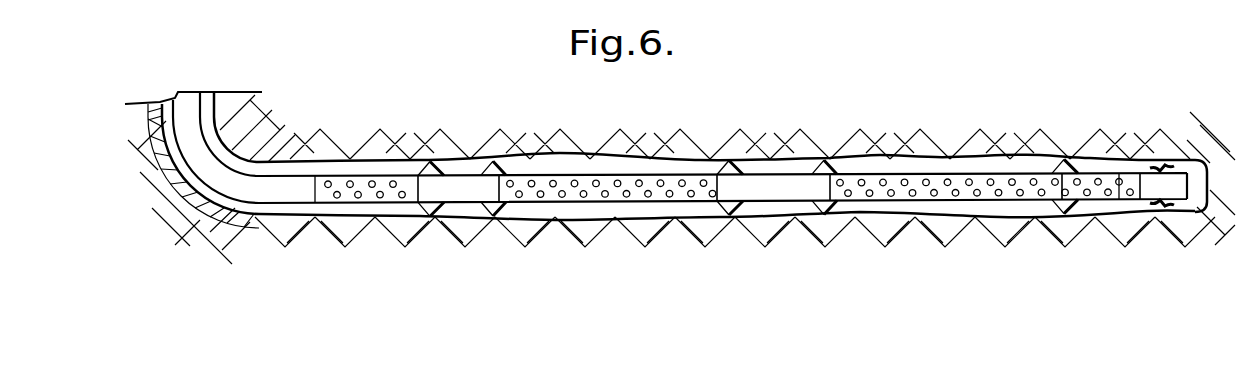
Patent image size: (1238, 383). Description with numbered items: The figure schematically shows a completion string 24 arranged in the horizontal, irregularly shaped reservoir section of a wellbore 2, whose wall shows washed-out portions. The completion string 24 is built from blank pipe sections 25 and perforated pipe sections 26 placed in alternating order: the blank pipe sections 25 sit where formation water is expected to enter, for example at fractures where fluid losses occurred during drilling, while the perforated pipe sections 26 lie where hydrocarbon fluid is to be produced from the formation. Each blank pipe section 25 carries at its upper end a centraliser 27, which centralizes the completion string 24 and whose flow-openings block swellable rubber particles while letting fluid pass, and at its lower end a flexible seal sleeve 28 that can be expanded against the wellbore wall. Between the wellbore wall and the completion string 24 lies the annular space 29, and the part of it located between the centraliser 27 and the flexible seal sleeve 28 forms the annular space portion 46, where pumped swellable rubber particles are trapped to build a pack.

The wellbore 2 is at (244, 112).
The completion string 24 is at (277, 193).
The blank pipe section 25 is at (290, 177).
The perforated pipe section 26 is at (360, 183).
The centraliser 27 is at (413, 218).
The flexible seal sleeve 28 is at (510, 203).
The annular space 29 is at (923, 207).
The annular space portion 46 is at (458, 183).